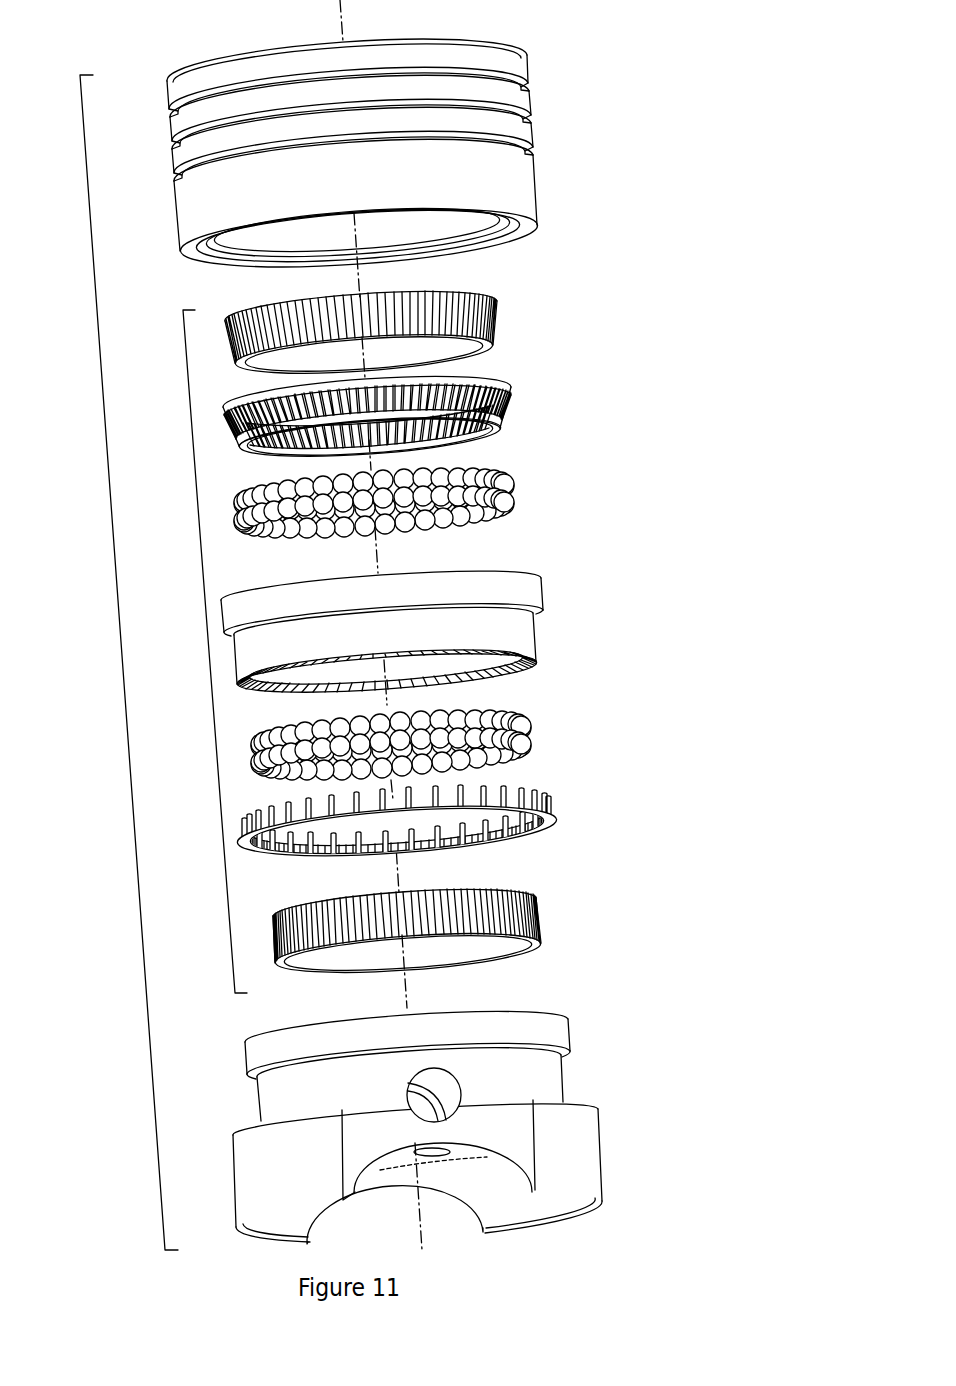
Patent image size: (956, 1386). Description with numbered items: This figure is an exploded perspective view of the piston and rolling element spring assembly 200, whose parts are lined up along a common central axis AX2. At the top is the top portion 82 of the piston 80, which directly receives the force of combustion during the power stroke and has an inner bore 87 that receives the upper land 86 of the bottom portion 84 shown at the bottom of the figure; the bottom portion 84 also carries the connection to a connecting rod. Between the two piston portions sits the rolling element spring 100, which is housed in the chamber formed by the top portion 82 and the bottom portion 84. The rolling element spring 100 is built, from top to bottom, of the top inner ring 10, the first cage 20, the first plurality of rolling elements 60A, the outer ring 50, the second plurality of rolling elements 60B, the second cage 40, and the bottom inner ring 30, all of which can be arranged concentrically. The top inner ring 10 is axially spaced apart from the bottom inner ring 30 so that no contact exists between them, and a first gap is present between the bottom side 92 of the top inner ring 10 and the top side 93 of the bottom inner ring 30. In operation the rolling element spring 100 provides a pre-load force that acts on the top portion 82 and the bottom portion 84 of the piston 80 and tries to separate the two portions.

The central axis AX2 is at (340, 23).
The piston 80 is at (436, 641).
The top portion 82 is at (399, 158).
The bottom portion 84 is at (585, 1133).
The upper land 86 is at (558, 1041).
The inner bore 87 is at (457, 222).
The top inner ring 10 is at (416, 335).
The bottom side 92 is at (483, 345).
The first cage 20 is at (507, 405).
The first plurality of rolling elements 60A is at (513, 484).
The outer ring 50 is at (538, 597).
The second plurality of rolling elements 60B is at (533, 730).
The second cage 40 is at (557, 817).
The bottom inner ring 30 is at (460, 922).
The top side 93 is at (527, 886).
The rolling element spring 100 is at (208, 676).
The piston and rolling element spring assembly 200 is at (130, 798).